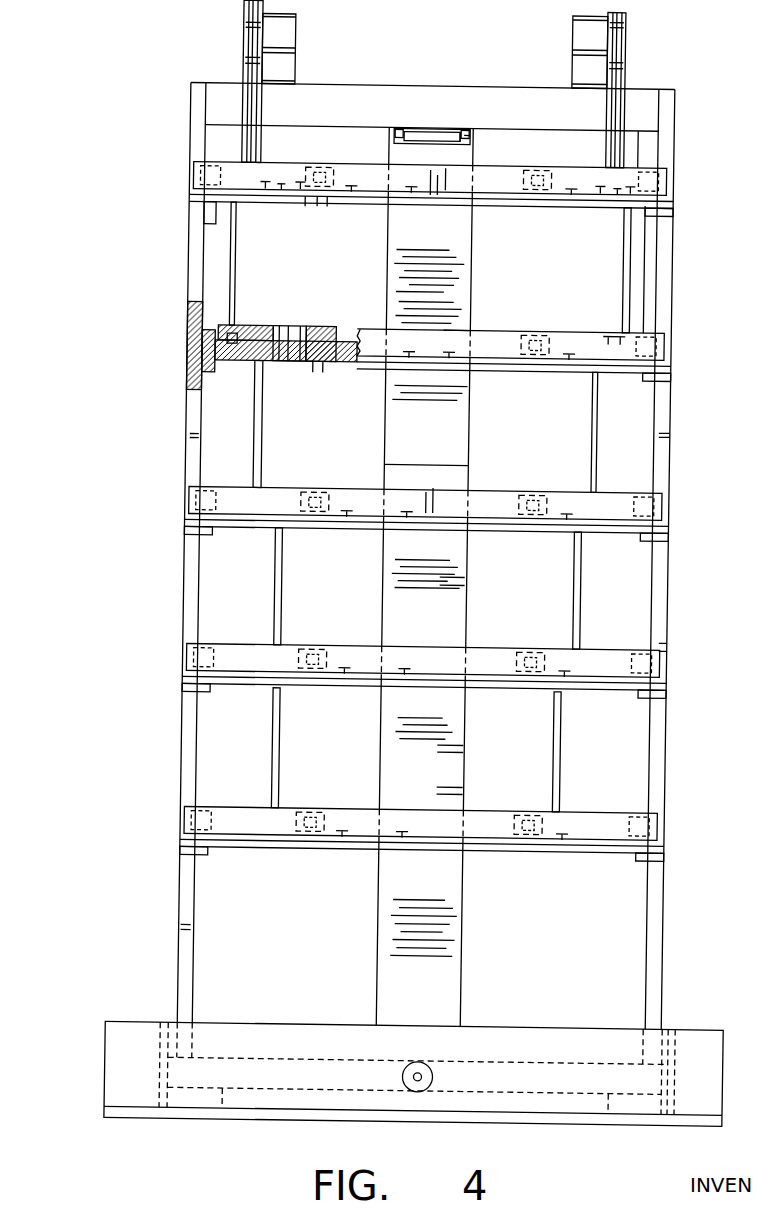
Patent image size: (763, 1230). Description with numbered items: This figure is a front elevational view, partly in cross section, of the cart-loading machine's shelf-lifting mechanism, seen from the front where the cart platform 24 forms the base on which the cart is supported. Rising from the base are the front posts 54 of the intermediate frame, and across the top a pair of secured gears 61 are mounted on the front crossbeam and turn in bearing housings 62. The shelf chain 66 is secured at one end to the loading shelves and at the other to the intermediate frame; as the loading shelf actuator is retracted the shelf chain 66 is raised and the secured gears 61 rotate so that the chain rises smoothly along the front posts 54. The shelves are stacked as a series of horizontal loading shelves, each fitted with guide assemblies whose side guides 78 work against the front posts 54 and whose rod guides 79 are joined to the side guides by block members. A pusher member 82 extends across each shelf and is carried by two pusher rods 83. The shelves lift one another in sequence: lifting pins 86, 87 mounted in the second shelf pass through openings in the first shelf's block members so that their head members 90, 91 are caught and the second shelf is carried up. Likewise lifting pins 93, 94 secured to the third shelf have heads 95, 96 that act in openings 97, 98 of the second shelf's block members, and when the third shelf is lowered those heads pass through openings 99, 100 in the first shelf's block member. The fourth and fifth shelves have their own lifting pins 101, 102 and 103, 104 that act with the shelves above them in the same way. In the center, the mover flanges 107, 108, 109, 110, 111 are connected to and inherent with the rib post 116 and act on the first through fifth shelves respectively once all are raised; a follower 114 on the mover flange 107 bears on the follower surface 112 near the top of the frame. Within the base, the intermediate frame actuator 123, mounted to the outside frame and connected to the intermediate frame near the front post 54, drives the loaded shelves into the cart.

The cart platform 24 is at (118, 1072).
The front posts 54 is at (196, 420).
The secured gears 61 is at (242, 56).
The bearing housings 62 is at (288, 42).
The shelf chain 66 is at (250, 102).
The side guides 78 is at (215, 370).
The rod guides 79 is at (338, 177).
The pusher members 82 is at (363, 186).
The pusher rods 83 is at (308, 207).
The lifting pin 86 is at (232, 285).
The lifting pin 87 is at (626, 262).
The head member 90 is at (233, 172).
The head member 91 is at (645, 167).
The lifting pin 93 is at (258, 447).
The lifting pin 94 is at (598, 407).
The head 95 is at (259, 340).
The head 96 is at (618, 322).
The opening 97 is at (254, 337).
The opening 98 is at (596, 334).
The opening 99 is at (268, 178).
The opening 100 is at (604, 176).
The lifting pin 101 is at (278, 577).
The lifting pin 102 is at (575, 610).
The lifting pin 103 is at (284, 725).
The lifting pin 104 is at (553, 770).
The mover flange 107 is at (453, 160).
The mover flange 108 is at (447, 323).
The mover flange 109 is at (457, 480).
The mover flange 110 is at (458, 641).
The mover flange 111 is at (458, 805).
The follower surface 112 is at (418, 125).
The follower 114 is at (462, 143).
The rib post 116 is at (457, 437).
The intermediate frame actuator 123 is at (437, 1062).